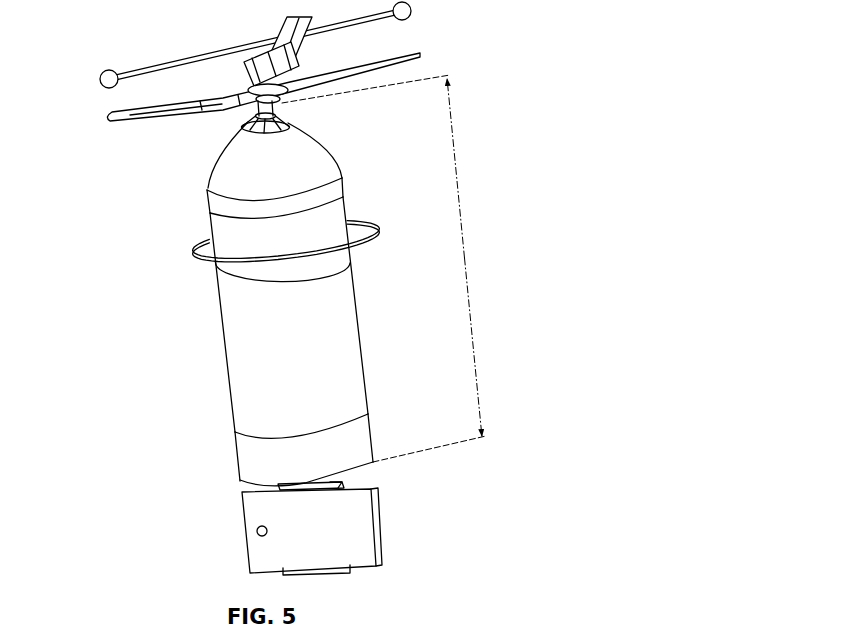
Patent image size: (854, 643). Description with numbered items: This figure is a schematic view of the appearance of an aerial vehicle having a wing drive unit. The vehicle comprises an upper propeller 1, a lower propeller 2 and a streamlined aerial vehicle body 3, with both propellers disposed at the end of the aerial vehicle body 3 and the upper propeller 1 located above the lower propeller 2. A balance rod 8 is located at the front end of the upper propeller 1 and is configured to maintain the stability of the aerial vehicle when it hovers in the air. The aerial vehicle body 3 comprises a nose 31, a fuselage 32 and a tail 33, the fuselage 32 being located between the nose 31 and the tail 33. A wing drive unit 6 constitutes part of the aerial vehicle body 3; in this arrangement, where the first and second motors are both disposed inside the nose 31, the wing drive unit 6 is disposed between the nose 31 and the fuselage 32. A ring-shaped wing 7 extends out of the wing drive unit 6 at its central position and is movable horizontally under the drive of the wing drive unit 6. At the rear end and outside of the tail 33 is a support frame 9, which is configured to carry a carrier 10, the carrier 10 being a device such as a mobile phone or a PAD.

The upper propeller 1 is at (203, 84).
The lower propeller 2 is at (113, 112).
The aerial vehicle body 3 is at (387, 268).
The nose 31 is at (204, 176).
The fuselage 32 is at (221, 371).
The tail 33 is at (234, 462).
The wing drive unit 6 is at (213, 227).
The ring-shaped wing 7 is at (373, 227).
The balance rod 8 is at (412, 12).
The support frame 9 is at (284, 485).
The carrier 10 is at (243, 523).